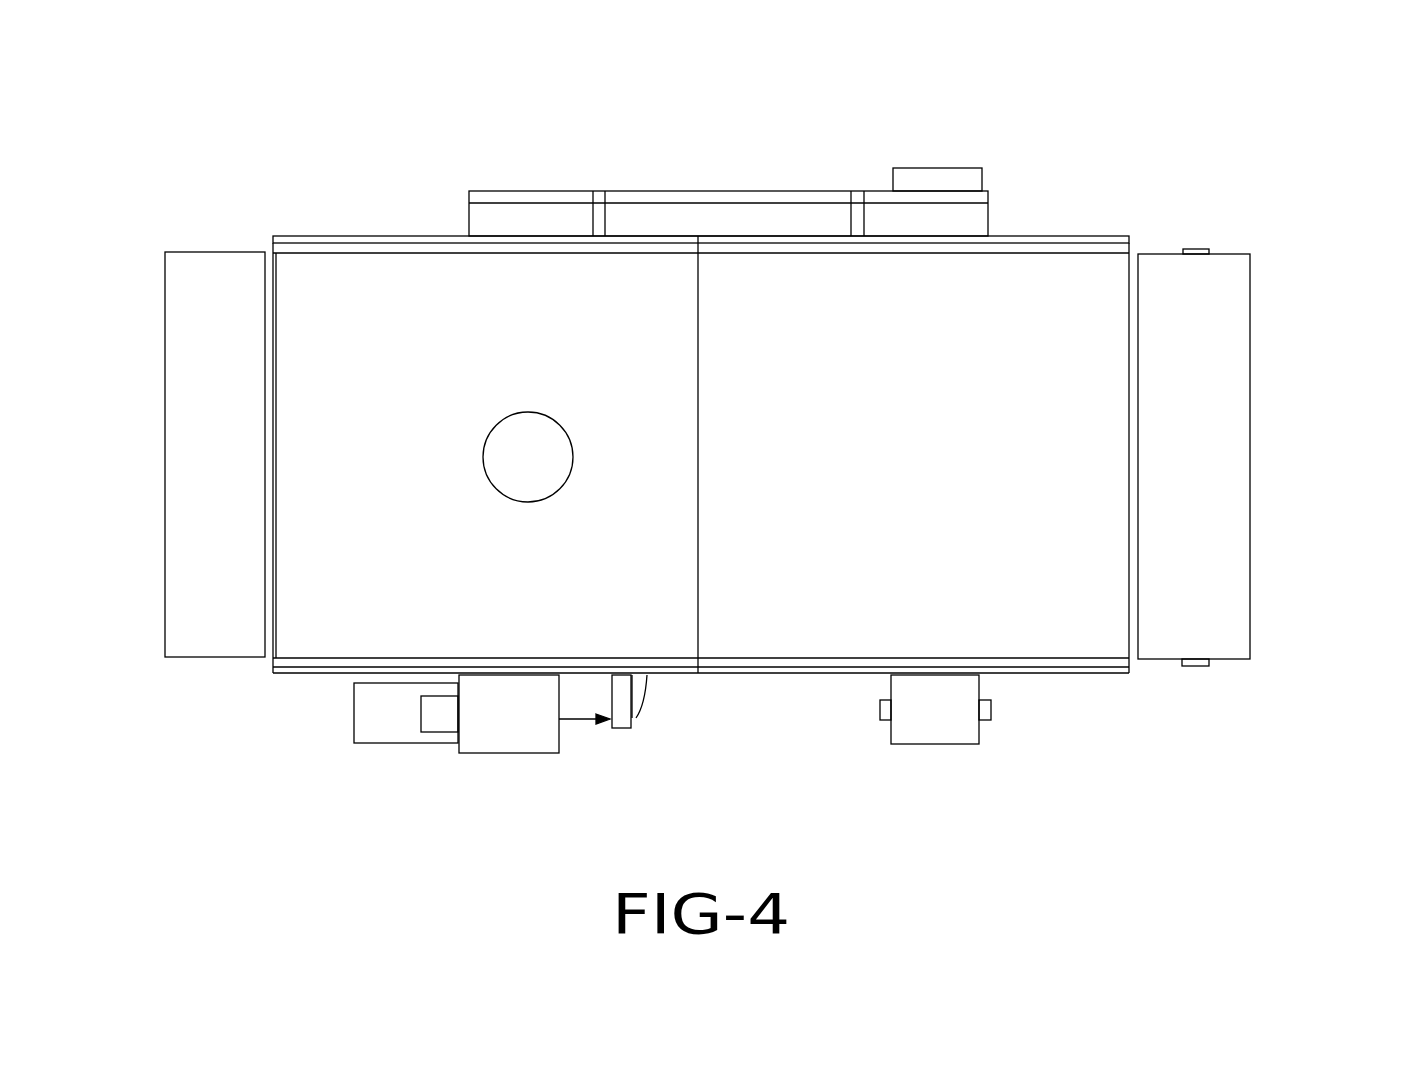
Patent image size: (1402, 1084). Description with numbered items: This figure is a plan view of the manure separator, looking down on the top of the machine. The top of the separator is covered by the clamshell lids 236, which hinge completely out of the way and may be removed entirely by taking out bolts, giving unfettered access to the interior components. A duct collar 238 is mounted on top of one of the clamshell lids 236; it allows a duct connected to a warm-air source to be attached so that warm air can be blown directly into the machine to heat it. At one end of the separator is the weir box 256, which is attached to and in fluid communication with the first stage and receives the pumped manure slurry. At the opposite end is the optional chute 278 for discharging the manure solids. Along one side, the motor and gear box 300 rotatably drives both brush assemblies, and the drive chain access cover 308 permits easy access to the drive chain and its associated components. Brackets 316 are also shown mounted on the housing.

The clamshell lids 236 is at (349, 301).
The duct collar 238 is at (515, 440).
The weir box 256 is at (1250, 377).
The chute 278 is at (218, 311).
The motor and gear box 300 is at (512, 755).
The drive chain access cover 308 is at (678, 192).
The mounting bracket 316 is at (922, 175).